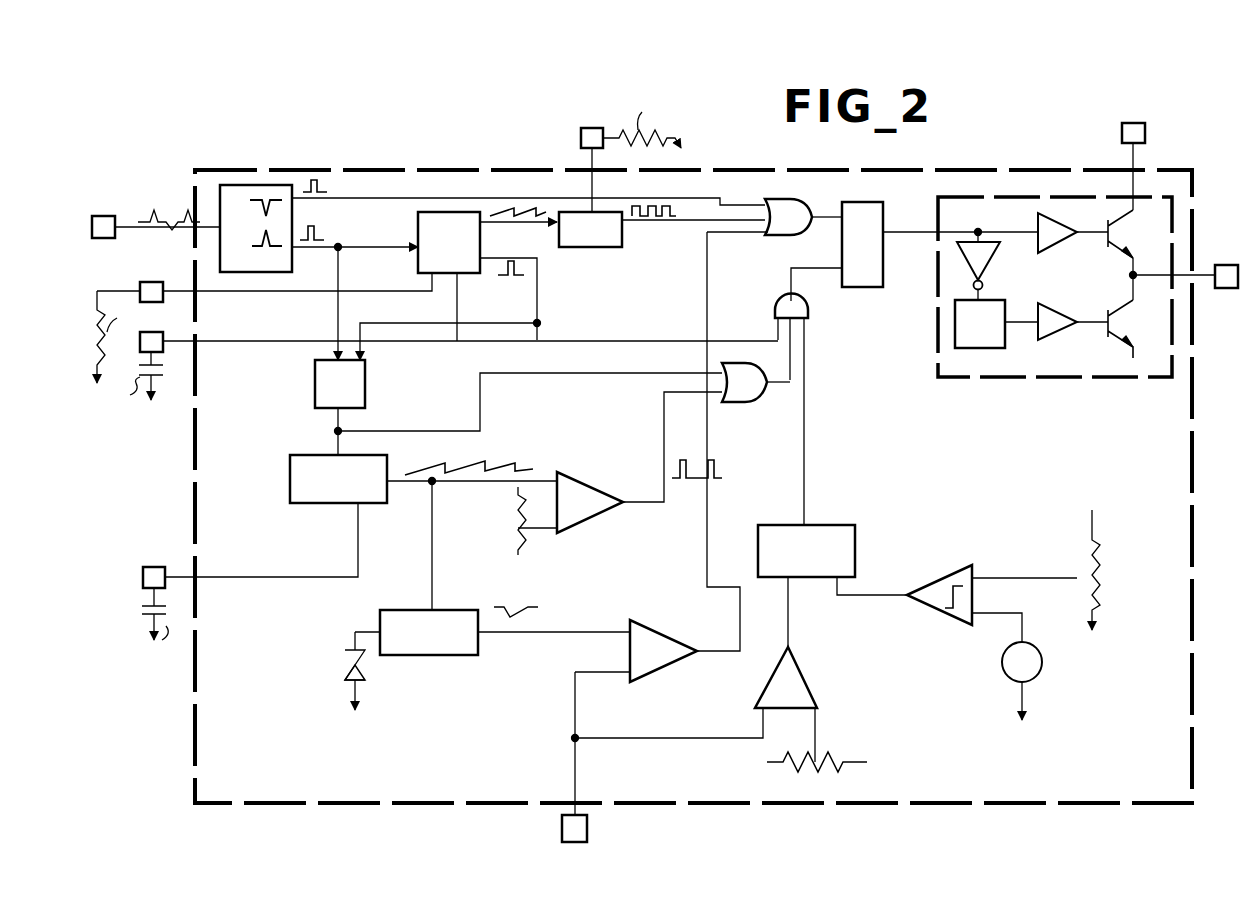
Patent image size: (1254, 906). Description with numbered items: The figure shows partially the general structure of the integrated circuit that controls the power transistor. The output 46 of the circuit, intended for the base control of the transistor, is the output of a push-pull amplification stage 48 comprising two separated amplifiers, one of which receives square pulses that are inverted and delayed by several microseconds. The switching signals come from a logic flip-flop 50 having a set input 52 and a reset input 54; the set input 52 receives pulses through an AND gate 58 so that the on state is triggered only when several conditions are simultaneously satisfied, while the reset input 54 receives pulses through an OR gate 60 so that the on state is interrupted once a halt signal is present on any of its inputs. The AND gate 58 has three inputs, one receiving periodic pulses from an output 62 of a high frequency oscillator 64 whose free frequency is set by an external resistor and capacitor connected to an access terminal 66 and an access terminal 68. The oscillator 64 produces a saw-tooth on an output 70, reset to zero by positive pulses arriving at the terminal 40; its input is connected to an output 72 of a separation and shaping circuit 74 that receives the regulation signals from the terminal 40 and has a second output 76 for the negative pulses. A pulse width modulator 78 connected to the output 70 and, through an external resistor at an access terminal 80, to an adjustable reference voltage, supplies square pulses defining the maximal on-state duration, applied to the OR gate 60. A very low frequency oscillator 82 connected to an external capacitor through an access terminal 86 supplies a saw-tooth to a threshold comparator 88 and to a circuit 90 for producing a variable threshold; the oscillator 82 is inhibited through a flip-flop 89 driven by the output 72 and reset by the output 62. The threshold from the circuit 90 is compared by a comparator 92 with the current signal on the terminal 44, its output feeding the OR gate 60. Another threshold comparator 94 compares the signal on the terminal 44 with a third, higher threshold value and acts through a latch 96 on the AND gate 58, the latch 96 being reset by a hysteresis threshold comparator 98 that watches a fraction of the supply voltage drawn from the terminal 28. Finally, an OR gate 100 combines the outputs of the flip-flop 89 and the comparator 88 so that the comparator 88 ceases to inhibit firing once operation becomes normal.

The terminal 28 is at (1145, 134).
The terminal 40 is at (102, 216).
The current measuring terminal 44 is at (587, 830).
The output 46 is at (1228, 264).
The push-pull amplification stage 48 is at (924, 322).
The logic flip-flop 50 is at (888, 226).
The set input 52 is at (820, 268).
The reset input 54 is at (818, 214).
The AND gate 58 is at (812, 300).
The OR gate 60 is at (774, 238).
The output 62 is at (496, 266).
The high frequency oscillator 64 is at (419, 220).
The access terminal 66 is at (140, 282).
The access terminal 68 is at (142, 332).
The output 70 is at (500, 226).
The output 72 is at (300, 255).
The separation and shaping circuit 74 is at (252, 184).
The output 76 is at (348, 190).
The pulse width modulator 78 is at (575, 249).
The access terminal 80 is at (588, 134).
The very low frequency oscillator 82 is at (306, 452).
The access terminal 86 is at (152, 565).
The threshold comparator 88 is at (580, 473).
The flip-flop 89 is at (368, 385).
The circuit for producing a variable threshold 90 is at (408, 608).
The comparator 92 is at (660, 629).
The threshold comparator 94 is at (802, 666).
The latch 96 is at (828, 524).
The hysteresis threshold comparator 98 is at (918, 580).
The OR gate 100 is at (760, 404).